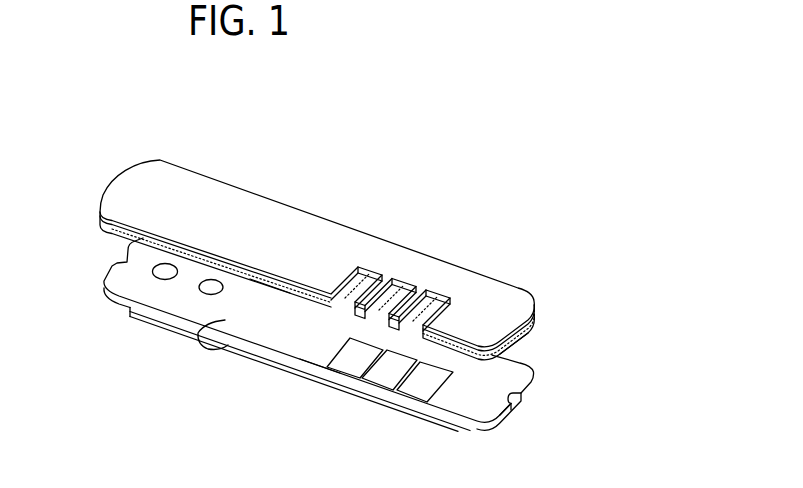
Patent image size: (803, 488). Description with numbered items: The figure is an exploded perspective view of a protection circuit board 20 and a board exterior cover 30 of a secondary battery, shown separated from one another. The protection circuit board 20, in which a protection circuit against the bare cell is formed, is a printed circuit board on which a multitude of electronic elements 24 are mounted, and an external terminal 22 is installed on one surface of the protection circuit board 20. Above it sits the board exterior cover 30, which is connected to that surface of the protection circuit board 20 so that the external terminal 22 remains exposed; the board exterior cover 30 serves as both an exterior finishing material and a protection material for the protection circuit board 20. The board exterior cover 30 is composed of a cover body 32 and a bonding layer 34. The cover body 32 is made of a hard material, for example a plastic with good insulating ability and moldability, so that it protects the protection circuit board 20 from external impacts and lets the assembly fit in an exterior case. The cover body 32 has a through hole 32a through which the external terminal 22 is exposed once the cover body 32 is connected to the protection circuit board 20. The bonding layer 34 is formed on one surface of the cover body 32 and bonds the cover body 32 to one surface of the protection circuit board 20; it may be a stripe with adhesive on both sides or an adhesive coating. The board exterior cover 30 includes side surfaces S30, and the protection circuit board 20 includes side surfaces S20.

The protection circuit board 20 is at (379, 355).
The external terminal 22 is at (410, 393).
The electronic elements 24 is at (283, 374).
The board exterior cover 30 is at (343, 270).
The cover body 32 is at (309, 228).
The through hole 32a is at (402, 280).
The bonding layer 34 is at (100, 216).
The side surfaces of the protection circuit board S20 is at (497, 420).
The side surfaces of the board exterior cover S30 is at (538, 318).